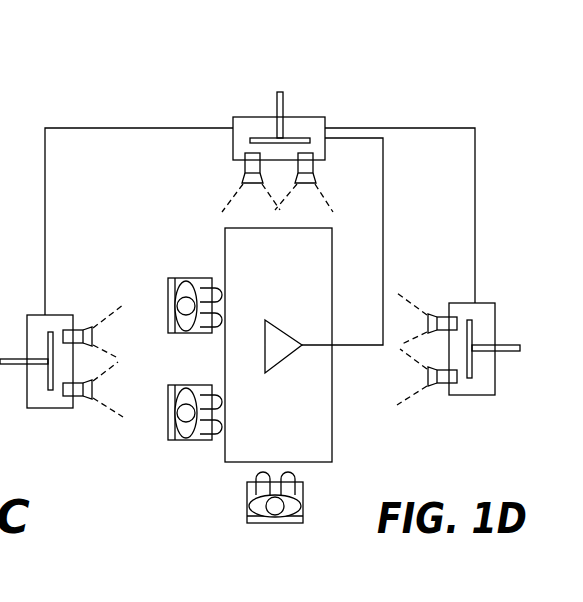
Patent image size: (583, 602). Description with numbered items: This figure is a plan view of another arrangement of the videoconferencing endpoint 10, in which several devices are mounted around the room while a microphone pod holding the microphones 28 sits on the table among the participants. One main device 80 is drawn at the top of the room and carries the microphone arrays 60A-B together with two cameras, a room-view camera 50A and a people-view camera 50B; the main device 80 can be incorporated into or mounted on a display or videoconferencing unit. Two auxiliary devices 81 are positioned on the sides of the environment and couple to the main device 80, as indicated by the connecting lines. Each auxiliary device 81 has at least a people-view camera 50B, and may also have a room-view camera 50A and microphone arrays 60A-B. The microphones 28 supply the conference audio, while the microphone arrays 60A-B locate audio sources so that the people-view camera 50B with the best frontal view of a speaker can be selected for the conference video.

The endpoint 10 is at (420, 90).
The microphone 28 is at (278, 368).
The room-view camera 50A is at (244, 165).
The people-view camera 50B is at (316, 165).
The microphone arrays 60A-B is at (284, 98).
The main device 80 is at (246, 117).
The auxiliary device 81 is at (33, 315).